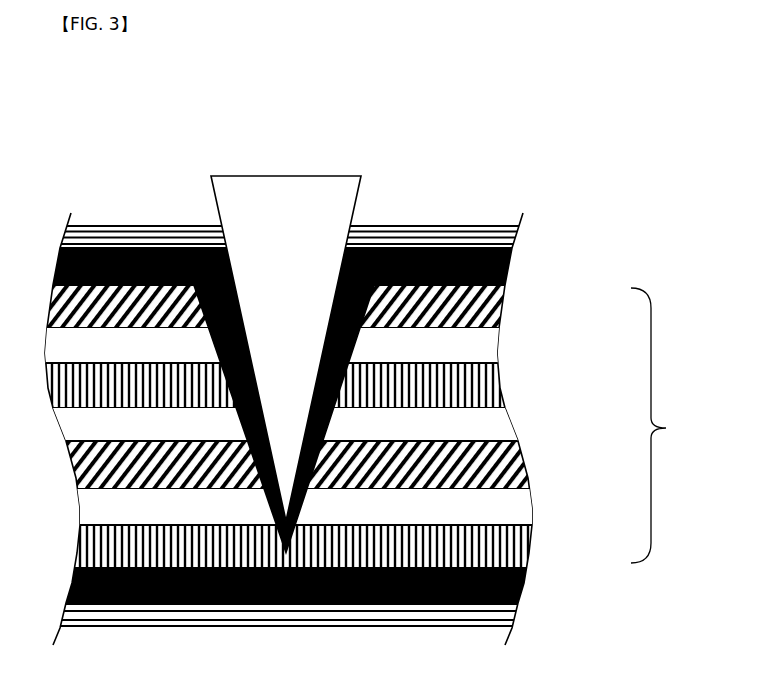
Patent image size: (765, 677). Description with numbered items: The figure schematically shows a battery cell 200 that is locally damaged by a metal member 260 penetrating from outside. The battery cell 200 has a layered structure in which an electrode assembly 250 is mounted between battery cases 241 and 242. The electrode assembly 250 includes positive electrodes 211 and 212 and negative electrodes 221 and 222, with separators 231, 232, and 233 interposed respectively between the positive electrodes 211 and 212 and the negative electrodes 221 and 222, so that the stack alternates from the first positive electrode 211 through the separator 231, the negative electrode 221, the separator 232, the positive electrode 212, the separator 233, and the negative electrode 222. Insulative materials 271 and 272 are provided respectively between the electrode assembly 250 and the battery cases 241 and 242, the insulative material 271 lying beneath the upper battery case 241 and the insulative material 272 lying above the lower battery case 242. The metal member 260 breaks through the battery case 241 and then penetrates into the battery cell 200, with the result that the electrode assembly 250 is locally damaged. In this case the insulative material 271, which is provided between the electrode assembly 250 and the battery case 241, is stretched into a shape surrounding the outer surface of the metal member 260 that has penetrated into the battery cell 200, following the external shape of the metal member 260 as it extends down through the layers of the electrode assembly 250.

The battery cell 200 is at (142, 194).
The battery case 241 is at (513, 223).
The insulative material 271 is at (505, 257).
The positive electrode 211 is at (492, 305).
The separator 231 is at (490, 345).
The negative electrode 221 is at (497, 383).
The separator 232 is at (507, 420).
The positive electrode 212 is at (518, 460).
The separator 233 is at (522, 500).
The negative electrode 222 is at (518, 535).
The insulative material 272 is at (513, 573).
The battery case 242 is at (507, 607).
The electrode assembly 250 is at (671, 425).
The metal member 260 is at (332, 168).